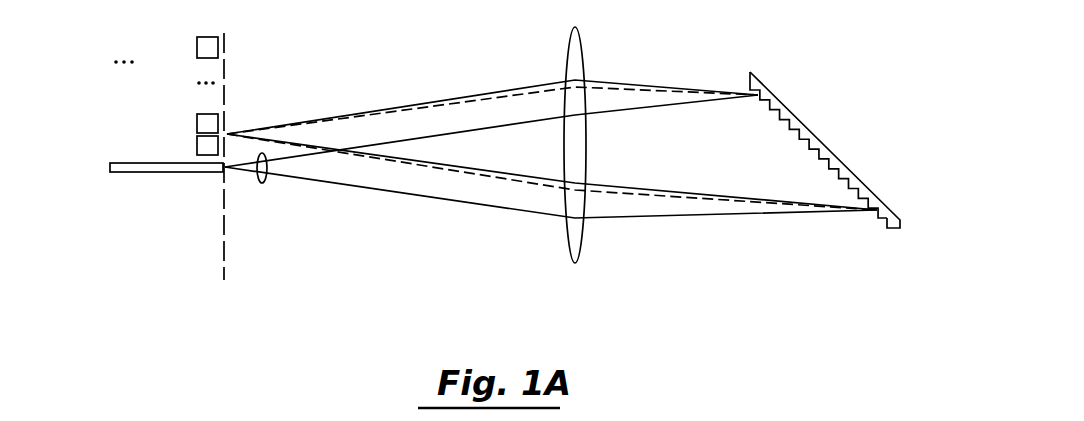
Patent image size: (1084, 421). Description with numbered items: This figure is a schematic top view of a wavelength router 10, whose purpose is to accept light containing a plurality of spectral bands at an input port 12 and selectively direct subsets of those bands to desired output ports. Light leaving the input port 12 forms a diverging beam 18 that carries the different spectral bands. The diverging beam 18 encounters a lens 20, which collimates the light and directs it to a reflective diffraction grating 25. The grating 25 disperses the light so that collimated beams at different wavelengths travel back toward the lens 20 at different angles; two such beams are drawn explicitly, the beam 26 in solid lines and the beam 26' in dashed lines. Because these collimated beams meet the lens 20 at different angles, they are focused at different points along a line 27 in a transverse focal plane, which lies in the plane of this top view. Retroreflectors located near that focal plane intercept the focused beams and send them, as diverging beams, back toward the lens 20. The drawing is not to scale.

The wavelength router 10 is at (250, 283).
The input port 12 is at (213, 173).
The diverging beam 18 is at (267, 178).
The lens 20 is at (576, 264).
The reflective diffraction grating 25 is at (750, 72).
The collimated beam 26 is at (551, 136).
The collimated beam 26' is at (552, 126).
The line in the transverse focal plane 27 is at (225, 252).